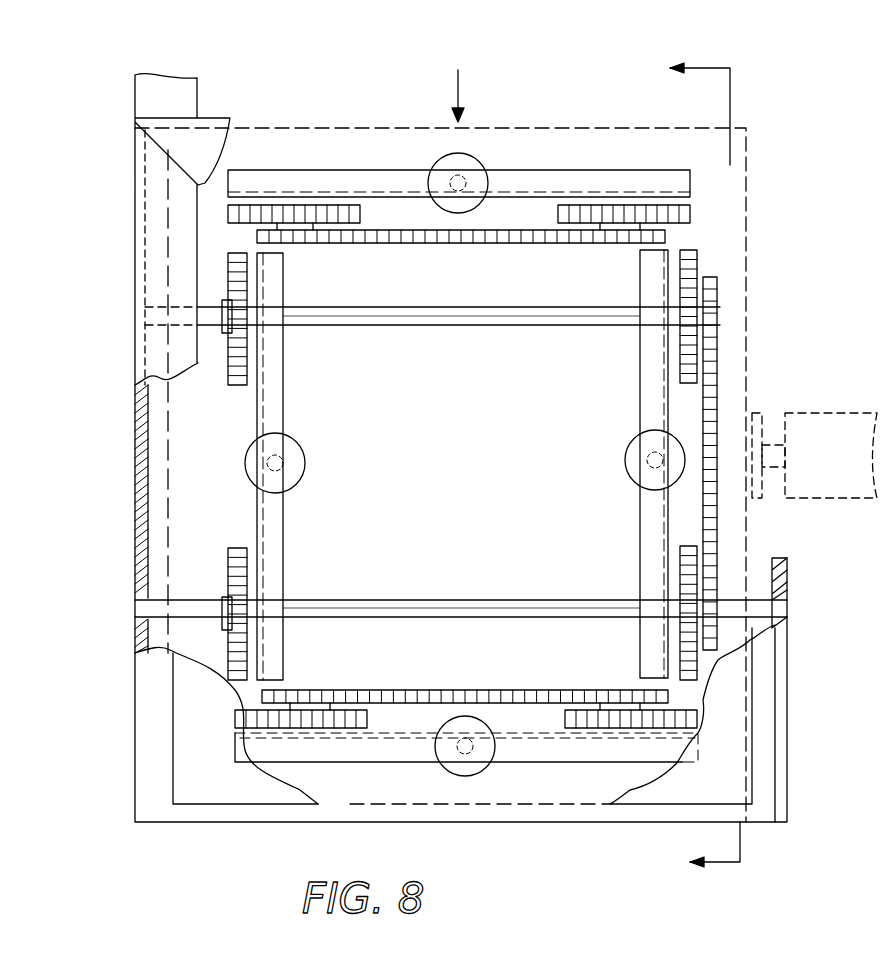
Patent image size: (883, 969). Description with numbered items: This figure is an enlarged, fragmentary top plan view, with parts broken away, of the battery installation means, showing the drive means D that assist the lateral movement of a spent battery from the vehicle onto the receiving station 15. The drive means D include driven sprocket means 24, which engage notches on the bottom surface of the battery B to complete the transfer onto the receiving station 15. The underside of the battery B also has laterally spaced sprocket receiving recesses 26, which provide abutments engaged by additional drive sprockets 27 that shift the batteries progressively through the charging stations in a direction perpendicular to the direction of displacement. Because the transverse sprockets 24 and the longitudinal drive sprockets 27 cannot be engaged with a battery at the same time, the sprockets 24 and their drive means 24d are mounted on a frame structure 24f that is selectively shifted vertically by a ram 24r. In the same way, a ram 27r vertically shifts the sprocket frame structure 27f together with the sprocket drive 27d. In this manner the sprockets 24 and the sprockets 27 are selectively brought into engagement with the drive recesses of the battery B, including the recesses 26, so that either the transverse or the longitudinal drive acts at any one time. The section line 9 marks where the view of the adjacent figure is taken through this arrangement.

The driven sprocket means 24 is at (244, 207).
The ram 24r is at (442, 160).
The frame structure 24f is at (507, 167).
The drive means 24d is at (505, 690).
The drive sprockets 27 is at (690, 248).
The ram 27r is at (247, 473).
The sprocket frame structure 27f is at (657, 583).
The sprocket drive 27d is at (717, 363).
The receiving station 15 is at (768, 250).
The section line 9 is at (705, 468).
The battery B is at (882, 330).
The drive means D is at (727, 690).
The sprocket receiving recesses 26 is at (875, 466).